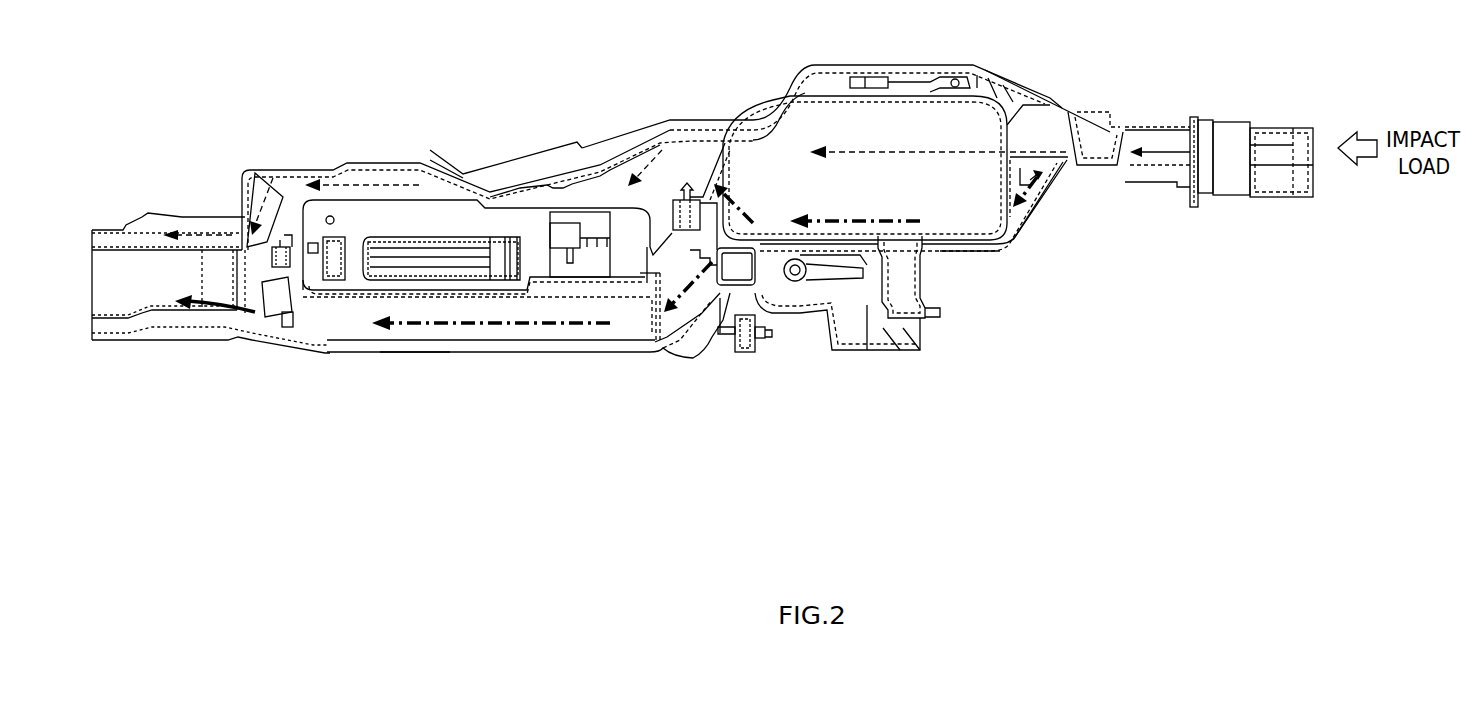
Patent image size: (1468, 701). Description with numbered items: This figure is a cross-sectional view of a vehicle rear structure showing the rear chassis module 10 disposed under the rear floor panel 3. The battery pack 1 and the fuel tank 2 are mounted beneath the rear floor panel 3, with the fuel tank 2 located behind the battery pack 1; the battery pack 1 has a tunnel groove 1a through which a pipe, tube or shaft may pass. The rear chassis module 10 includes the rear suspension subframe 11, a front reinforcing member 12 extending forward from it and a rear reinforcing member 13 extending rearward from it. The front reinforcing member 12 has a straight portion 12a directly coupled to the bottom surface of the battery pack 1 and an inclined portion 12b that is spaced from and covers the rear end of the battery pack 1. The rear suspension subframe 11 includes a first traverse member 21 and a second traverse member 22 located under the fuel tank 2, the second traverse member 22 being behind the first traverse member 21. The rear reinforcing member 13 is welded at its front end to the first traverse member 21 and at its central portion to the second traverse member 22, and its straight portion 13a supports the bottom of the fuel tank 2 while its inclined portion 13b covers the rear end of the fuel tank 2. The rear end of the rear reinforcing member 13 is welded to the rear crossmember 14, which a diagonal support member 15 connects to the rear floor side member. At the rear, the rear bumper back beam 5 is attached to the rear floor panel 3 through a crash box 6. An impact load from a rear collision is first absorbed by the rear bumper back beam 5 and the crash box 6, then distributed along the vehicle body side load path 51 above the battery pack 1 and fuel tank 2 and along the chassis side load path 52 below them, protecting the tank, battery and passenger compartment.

The battery pack 1 is at (327, 328).
The tunnel groove 1a is at (513, 318).
The fuel tank 2 is at (840, 127).
The rear floor panel 3 is at (455, 176).
The rear bumper back beam 5 is at (1277, 127).
The crash box 6 is at (1232, 118).
The rear chassis module 10 is at (368, 392).
The rear suspension subframe 11 is at (748, 364).
The front reinforcing member 12 is at (534, 367).
The straight portion 12a is at (413, 355).
The inclined portion 12b is at (665, 362).
The rear reinforcing member 13 is at (1012, 257).
The straight portion 13a is at (975, 250).
The inclined portion 13b is at (1040, 220).
The rear crossmember 14 is at (1127, 128).
The support member 15 is at (1035, 152).
The first traverse member 21 is at (740, 278).
The second traverse member 22 is at (907, 275).
The vehicle body side load path 51 is at (262, 200).
The chassis side load path 52 is at (195, 310).